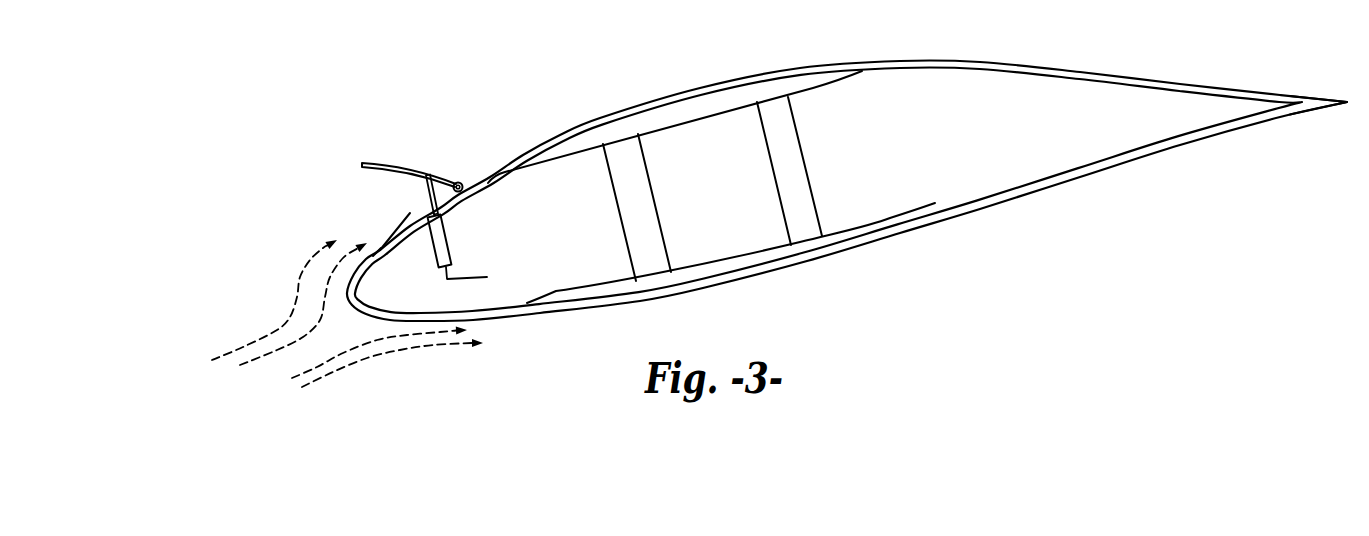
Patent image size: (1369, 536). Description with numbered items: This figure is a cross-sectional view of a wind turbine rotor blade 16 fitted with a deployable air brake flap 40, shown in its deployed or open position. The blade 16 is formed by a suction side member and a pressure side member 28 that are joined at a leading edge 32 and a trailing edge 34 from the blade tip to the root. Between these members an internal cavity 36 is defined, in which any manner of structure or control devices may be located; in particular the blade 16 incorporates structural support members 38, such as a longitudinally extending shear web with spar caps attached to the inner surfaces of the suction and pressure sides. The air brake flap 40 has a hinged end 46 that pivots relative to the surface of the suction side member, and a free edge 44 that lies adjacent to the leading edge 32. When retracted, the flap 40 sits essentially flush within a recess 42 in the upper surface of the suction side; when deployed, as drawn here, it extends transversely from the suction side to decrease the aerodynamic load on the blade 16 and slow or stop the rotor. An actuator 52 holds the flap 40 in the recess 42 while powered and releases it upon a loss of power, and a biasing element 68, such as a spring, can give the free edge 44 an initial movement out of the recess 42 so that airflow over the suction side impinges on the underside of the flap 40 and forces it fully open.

The blade 16 is at (546, 101).
The pressure side member 28 is at (962, 205).
The leading edge 32 is at (355, 310).
The trailing edge 34 is at (1328, 95).
The internal cavity 36 is at (733, 204).
The structural support members 38 is at (831, 162).
The air brake flap 40 is at (414, 162).
The recess 42 is at (410, 212).
The free edge 44 is at (363, 162).
The hinged end 46 is at (463, 178).
The actuator 52 is at (452, 242).
The biasing element 68 is at (388, 237).